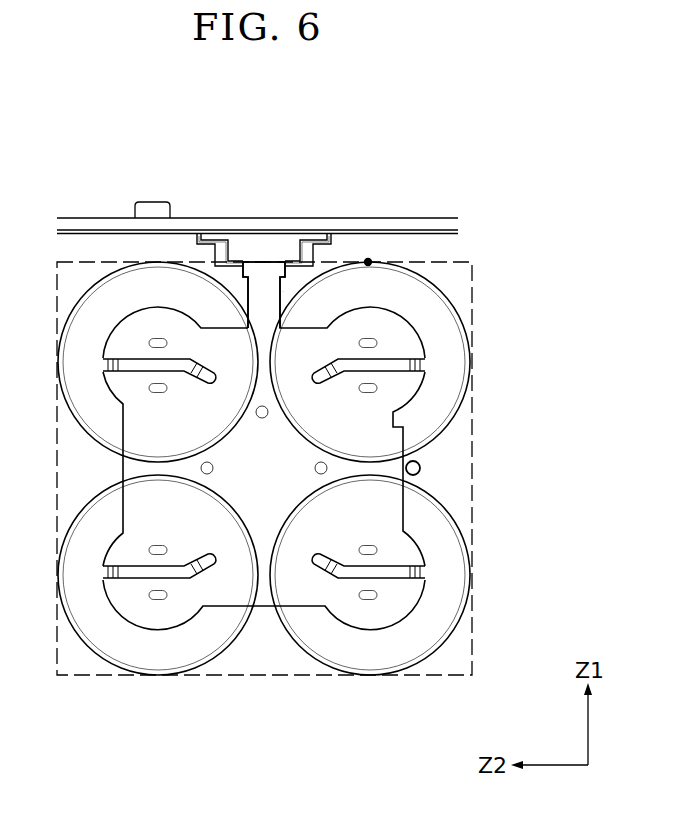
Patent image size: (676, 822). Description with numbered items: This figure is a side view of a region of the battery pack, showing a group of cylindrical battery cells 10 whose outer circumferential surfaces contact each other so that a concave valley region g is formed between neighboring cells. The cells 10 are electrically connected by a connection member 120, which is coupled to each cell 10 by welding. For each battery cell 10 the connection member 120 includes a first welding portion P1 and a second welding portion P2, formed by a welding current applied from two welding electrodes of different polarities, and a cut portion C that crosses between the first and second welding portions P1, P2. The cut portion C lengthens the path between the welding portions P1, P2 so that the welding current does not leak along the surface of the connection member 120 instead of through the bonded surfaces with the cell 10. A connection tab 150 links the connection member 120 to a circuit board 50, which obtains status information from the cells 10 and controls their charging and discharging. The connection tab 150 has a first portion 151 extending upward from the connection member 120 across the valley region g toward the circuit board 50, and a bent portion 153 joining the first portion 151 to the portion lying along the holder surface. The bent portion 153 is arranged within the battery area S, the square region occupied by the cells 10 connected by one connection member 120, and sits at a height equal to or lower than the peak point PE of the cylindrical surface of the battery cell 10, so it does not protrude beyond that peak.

The battery cell 10 is at (470, 586).
The circuit board 50 is at (85, 222).
The connection member 120 is at (263, 577).
The connection tab 150 is at (251, 226).
The first portion 151 is at (263, 303).
The bent portion 153 is at (262, 275).
The peak point PE is at (368, 259).
The valley region g is at (283, 291).
The first welding portion P1 is at (373, 342).
The second welding portion P2 is at (373, 387).
The cut portion C is at (420, 352).
The battery area S is at (472, 461).